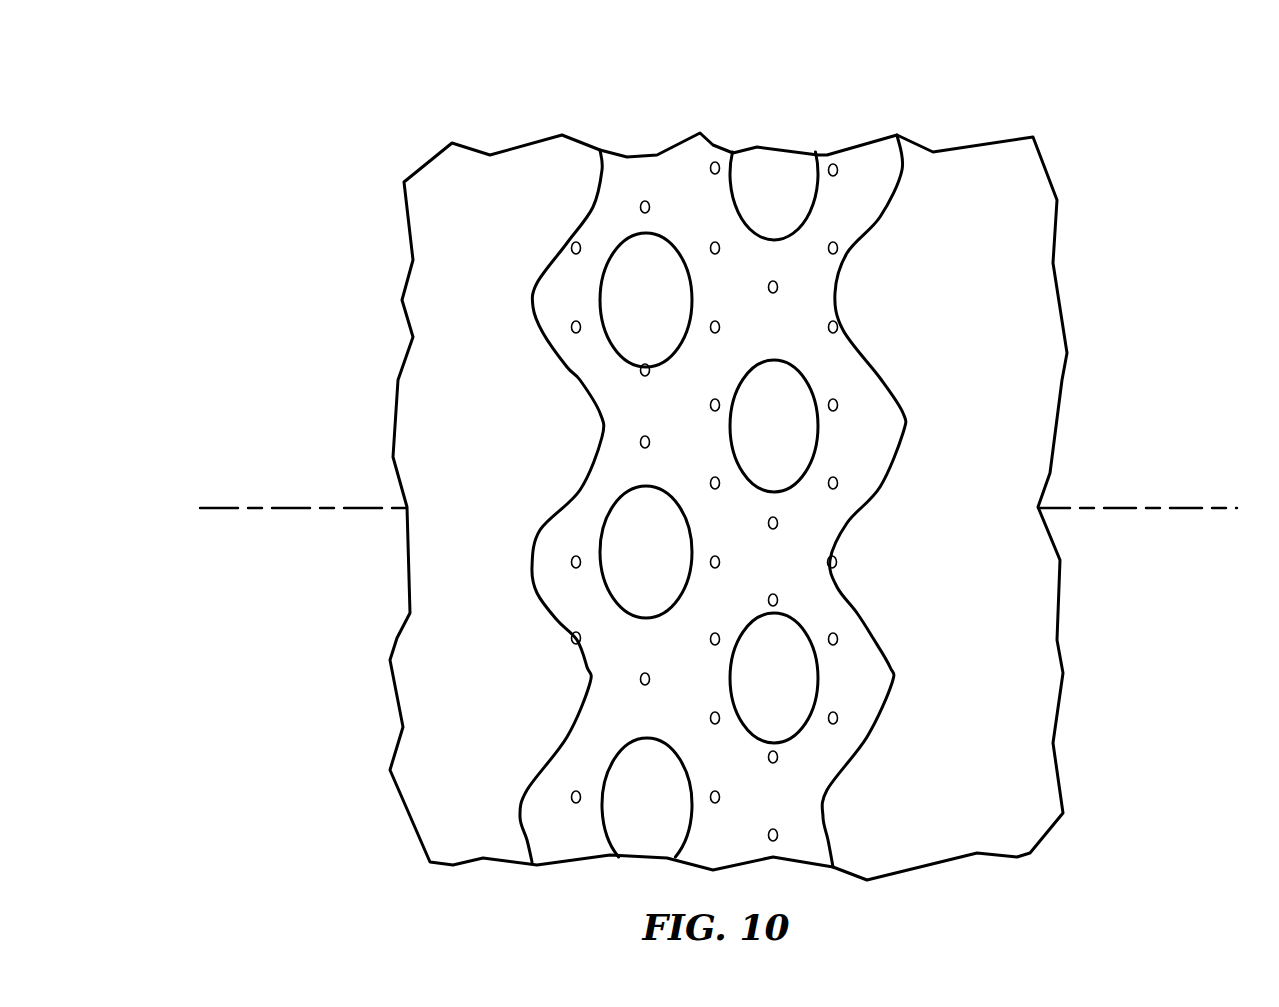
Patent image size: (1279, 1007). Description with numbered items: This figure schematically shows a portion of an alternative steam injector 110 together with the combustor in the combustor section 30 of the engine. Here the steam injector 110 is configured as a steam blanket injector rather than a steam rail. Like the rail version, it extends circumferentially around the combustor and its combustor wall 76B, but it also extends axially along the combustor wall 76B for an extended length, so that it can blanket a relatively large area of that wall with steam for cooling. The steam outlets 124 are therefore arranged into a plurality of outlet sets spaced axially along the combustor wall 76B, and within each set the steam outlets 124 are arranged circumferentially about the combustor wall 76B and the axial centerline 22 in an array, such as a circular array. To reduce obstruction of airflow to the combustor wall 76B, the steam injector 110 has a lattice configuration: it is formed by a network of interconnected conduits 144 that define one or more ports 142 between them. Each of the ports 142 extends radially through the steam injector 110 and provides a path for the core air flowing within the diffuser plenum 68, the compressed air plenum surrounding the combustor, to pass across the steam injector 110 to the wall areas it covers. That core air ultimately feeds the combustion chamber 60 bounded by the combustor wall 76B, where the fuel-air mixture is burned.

The axial centerline 22 is at (1218, 508).
The combustor section 30 is at (1104, 143).
The combustion chamber 60 is at (739, 456).
The combustor wall 76B is at (1000, 128).
The diffuser plenum 68 is at (425, 436).
The steam injector 110 is at (911, 176).
The steam outlets 124 is at (645, 201).
The ports 142 is at (755, 188).
The interconnected conduits 144 is at (565, 382).